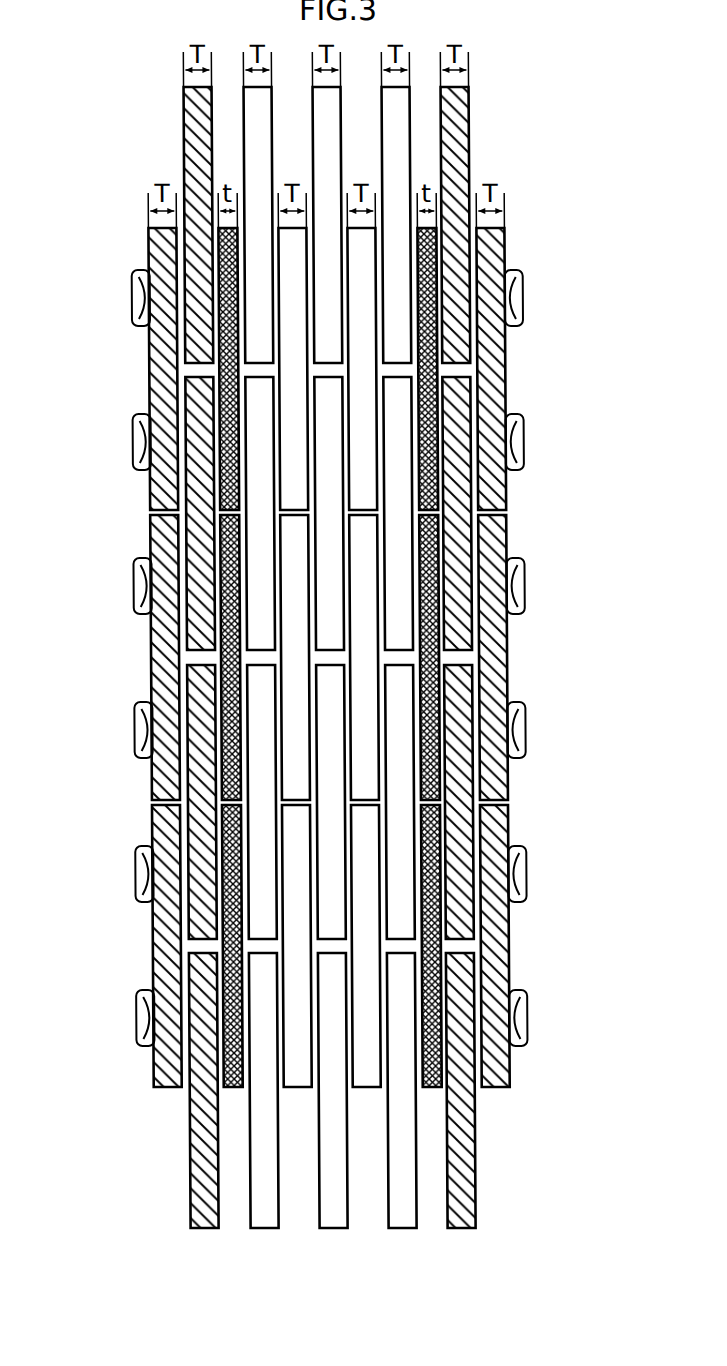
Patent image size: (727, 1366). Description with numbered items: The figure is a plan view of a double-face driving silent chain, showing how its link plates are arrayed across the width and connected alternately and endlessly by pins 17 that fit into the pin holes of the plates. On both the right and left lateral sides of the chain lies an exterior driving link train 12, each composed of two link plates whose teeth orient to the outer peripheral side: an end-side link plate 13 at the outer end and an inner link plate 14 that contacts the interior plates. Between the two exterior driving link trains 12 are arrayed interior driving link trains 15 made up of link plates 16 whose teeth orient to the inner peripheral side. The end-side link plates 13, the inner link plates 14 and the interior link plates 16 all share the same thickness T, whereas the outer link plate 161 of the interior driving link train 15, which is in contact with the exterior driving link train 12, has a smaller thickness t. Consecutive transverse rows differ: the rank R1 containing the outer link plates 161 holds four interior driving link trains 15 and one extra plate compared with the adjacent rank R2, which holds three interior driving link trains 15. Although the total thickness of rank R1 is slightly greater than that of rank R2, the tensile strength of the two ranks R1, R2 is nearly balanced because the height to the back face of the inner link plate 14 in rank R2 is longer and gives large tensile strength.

The exterior driving link train 12 is at (300, 703).
The end-side link plate 13 is at (148, 363).
The inner link plate 14 is at (194, 477).
The interior driving link train 15 is at (325, 1240).
The link plate 16 is at (319, 703).
The outer link plate 161 is at (545, 483).
The pin 17 is at (134, 438).
The rank R1 is at (507, 366).
The rank R2 is at (469, 510).